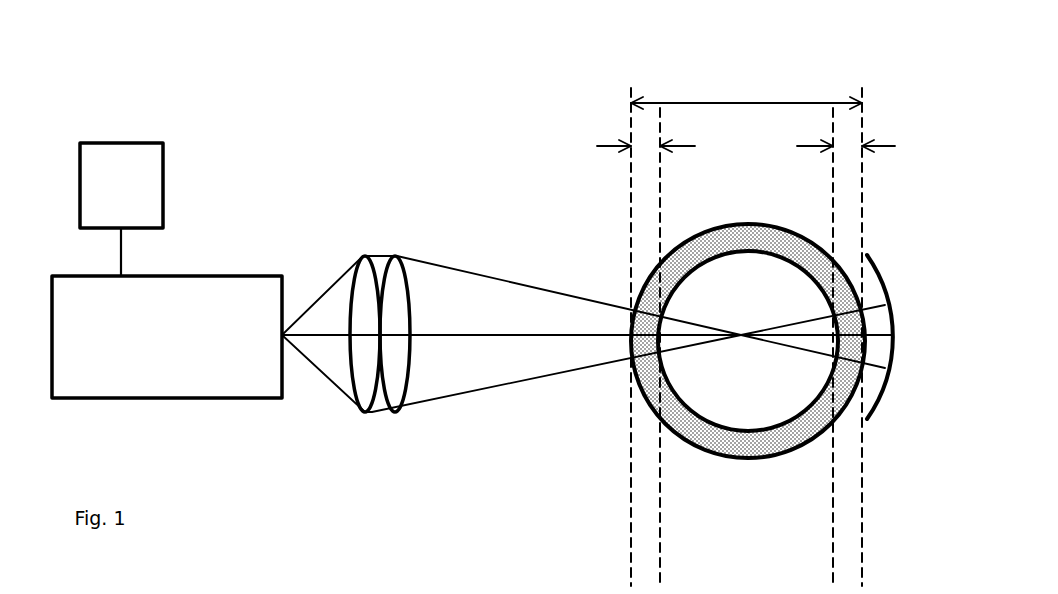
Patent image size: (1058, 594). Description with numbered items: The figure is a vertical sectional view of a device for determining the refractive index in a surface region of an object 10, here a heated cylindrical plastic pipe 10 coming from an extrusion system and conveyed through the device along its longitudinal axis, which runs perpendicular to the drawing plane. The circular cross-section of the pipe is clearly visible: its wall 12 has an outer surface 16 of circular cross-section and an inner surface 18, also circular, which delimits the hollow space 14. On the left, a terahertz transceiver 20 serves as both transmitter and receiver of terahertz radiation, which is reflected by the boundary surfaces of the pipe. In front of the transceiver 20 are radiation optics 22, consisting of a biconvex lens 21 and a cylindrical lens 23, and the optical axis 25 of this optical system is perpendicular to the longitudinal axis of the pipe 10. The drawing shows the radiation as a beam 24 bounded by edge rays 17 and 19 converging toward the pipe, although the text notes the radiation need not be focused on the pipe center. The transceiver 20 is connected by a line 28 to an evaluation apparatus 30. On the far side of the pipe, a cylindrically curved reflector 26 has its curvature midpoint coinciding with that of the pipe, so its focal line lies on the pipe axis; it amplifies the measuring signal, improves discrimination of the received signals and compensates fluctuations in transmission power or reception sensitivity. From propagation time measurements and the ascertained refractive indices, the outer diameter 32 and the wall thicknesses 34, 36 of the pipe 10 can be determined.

The object 10 is at (717, 332).
The wall 12 is at (717, 384).
The hollow space 14 is at (760, 407).
The outer surface 16 is at (677, 437).
The upper marginal ray 17 is at (488, 277).
The inner surface 18 is at (748, 398).
The lower marginal ray 19 is at (511, 389).
The terahertz transceiver 20 is at (212, 303).
The biconvex lens 21 is at (362, 372).
The radiation optics 22 is at (374, 295).
The cylindrical lens 23 is at (397, 374).
The light beam 24 is at (587, 329).
The optical axis 25 is at (458, 334).
The reflector 26 is at (887, 290).
The line 28 is at (120, 252).
The evaluation apparatus 30 is at (133, 178).
The outer diameter 32 is at (724, 103).
The wall thickness 34 is at (615, 146).
The wall thickness 36 is at (880, 146).